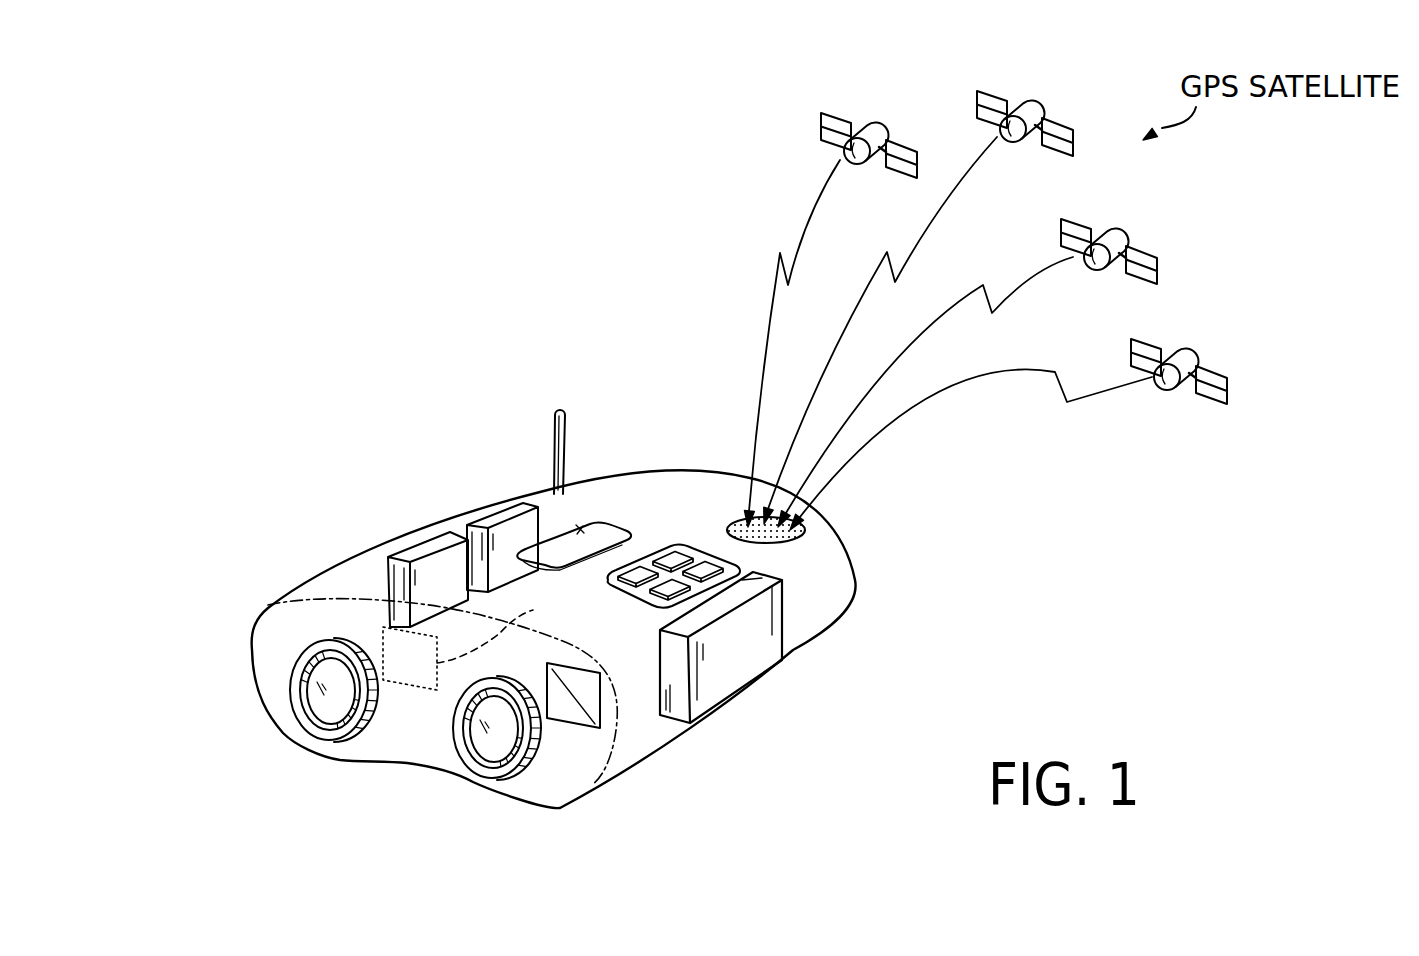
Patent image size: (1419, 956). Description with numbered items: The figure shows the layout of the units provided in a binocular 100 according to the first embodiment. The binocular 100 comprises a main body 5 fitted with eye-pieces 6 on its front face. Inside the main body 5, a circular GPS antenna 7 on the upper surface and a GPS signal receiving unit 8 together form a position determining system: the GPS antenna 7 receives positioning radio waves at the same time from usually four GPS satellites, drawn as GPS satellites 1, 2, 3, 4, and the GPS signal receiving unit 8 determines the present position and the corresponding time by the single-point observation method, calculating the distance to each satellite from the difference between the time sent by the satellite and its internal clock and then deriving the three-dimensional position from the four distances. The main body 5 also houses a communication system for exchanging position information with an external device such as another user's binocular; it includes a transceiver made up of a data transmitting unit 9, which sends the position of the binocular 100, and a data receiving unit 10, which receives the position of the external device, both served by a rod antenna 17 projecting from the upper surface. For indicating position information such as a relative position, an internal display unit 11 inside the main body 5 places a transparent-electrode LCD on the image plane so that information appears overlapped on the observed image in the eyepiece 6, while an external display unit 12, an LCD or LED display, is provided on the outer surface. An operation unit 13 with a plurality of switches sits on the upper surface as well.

The binocular 100 is at (426, 346).
The GPS satellite 1 is at (875, 118).
The GPS satellite 2 is at (1032, 103).
The GPS satellite 3 is at (1115, 227).
The GPS satellite 4 is at (1188, 347).
The main body 5 is at (262, 652).
The eye-pieces 6 is at (378, 713).
The GPS antenna 7 is at (742, 517).
The GPS signal receiving unit 8 is at (748, 662).
The data transmitting unit 9 is at (400, 548).
The data receiving unit 10 is at (483, 517).
The internal display unit 11 is at (547, 663).
The external display unit 12 is at (580, 528).
The operation unit 13 is at (680, 556).
The rod antenna 17 is at (553, 420).